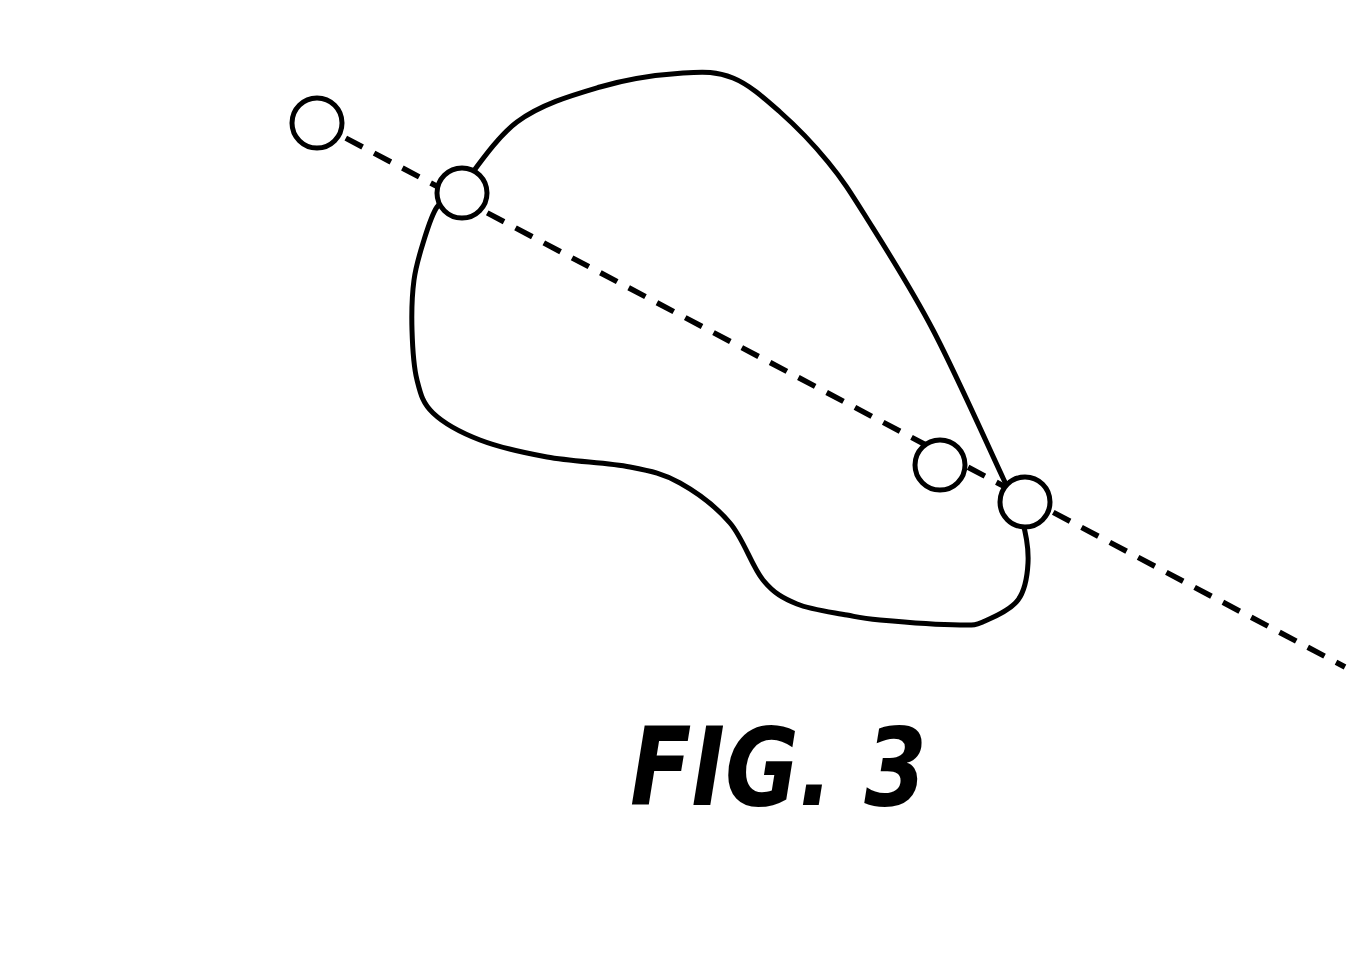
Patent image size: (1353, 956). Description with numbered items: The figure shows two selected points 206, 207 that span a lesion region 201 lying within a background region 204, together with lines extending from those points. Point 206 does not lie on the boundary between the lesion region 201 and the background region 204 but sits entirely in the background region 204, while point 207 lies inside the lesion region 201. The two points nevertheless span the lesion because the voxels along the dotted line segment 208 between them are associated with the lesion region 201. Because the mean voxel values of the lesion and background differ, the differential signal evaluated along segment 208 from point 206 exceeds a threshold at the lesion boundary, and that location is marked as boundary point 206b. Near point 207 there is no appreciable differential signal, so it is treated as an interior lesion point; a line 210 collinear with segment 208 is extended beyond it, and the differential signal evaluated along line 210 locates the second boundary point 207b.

The lesion region 201 is at (852, 187).
The background region 204 is at (1300, 185).
The point 206 is at (287, 132).
The point 206b is at (432, 200).
The point 207 is at (963, 443).
The boundary point 207b is at (1052, 482).
The dotted line segment 208 is at (503, 226).
The line 210 is at (1310, 657).